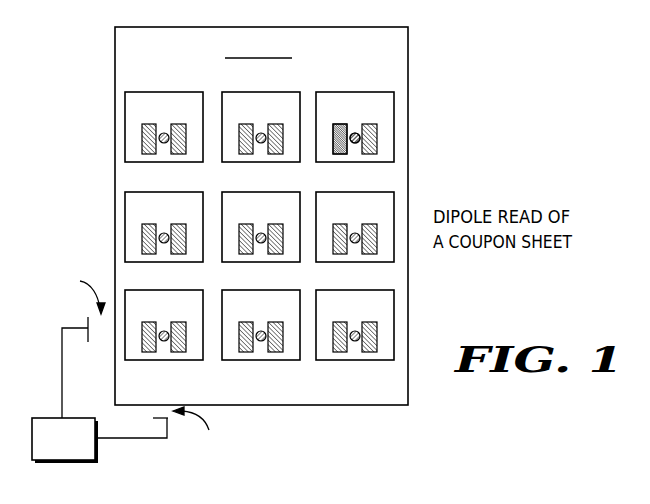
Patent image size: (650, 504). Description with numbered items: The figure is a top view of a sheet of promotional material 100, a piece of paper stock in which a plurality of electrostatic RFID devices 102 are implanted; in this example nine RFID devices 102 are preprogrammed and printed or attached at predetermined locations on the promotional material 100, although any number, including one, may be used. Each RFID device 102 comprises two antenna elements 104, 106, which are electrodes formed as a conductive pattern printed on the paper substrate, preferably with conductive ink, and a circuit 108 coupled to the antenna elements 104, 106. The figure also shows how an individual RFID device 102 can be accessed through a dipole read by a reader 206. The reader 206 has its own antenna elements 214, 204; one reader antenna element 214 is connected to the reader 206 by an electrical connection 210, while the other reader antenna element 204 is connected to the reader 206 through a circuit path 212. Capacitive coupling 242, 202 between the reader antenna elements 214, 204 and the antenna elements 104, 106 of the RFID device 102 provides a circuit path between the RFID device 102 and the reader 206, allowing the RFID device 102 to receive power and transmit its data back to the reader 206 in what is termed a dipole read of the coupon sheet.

The promotional material 100 is at (210, 27).
The RFID device 102 is at (259, 209).
The antenna element 104 is at (341, 155).
The antenna element 106 is at (376, 134).
The circuit 108 is at (355, 144).
The capacitive coupling 202 is at (198, 431).
The antenna element of the reader 204 is at (174, 421).
The reader 206 is at (66, 463).
The electrical connection 210 is at (62, 373).
The circuit path 212 is at (138, 440).
The antenna element of the reader 214 is at (88, 320).
The capacitive coupling 242 is at (76, 292).